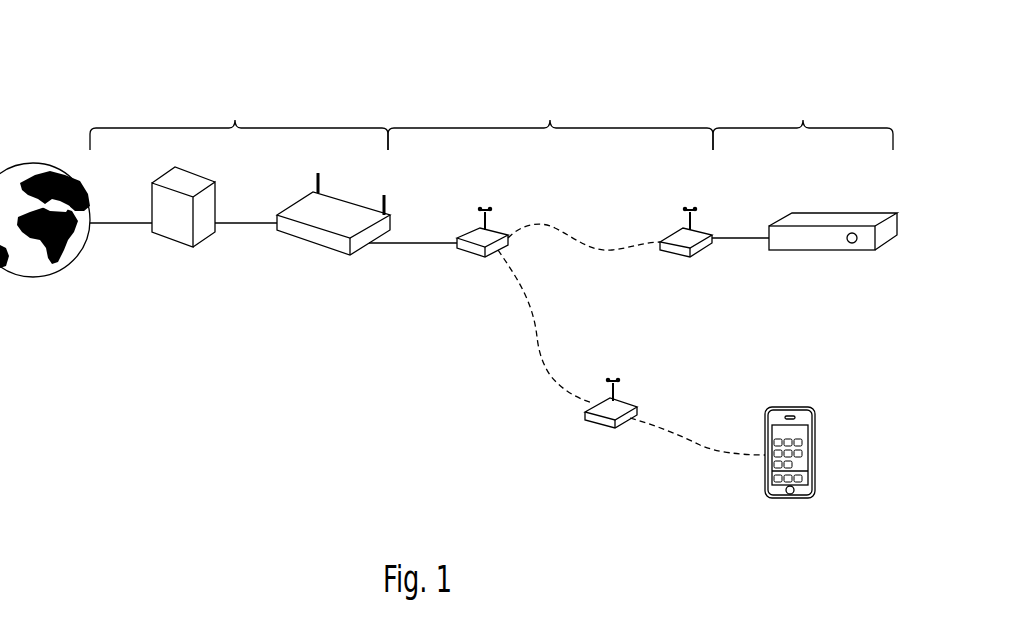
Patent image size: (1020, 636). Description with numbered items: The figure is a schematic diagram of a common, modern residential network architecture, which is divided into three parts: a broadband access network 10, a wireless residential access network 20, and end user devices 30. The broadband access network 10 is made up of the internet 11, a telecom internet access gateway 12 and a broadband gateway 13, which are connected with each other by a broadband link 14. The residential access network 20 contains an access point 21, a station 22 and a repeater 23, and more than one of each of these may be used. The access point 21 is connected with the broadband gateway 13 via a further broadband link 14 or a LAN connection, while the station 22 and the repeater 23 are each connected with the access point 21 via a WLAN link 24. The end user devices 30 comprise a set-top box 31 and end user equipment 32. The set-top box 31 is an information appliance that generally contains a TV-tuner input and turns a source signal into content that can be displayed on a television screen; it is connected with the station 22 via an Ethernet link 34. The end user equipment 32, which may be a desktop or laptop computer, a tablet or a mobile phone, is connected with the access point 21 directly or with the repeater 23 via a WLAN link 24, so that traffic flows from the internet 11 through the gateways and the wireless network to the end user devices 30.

The broadband access network 10 is at (235, 120).
The internet 11 is at (35, 268).
The telecom internet access gateway 12 is at (172, 247).
The broadband gateway 13 is at (310, 247).
The broadband link 14 is at (120, 223).
The wireless residential access network 20 is at (550, 120).
The access point 21 is at (470, 255).
The station 22 is at (675, 258).
The repeater 23 is at (597, 430).
The WLAN link 24 is at (585, 237).
The end user devices 30 is at (803, 120).
The set-top box 31 is at (827, 252).
The end user equipment 32 is at (786, 407).
The Ethernet link 34 is at (740, 240).